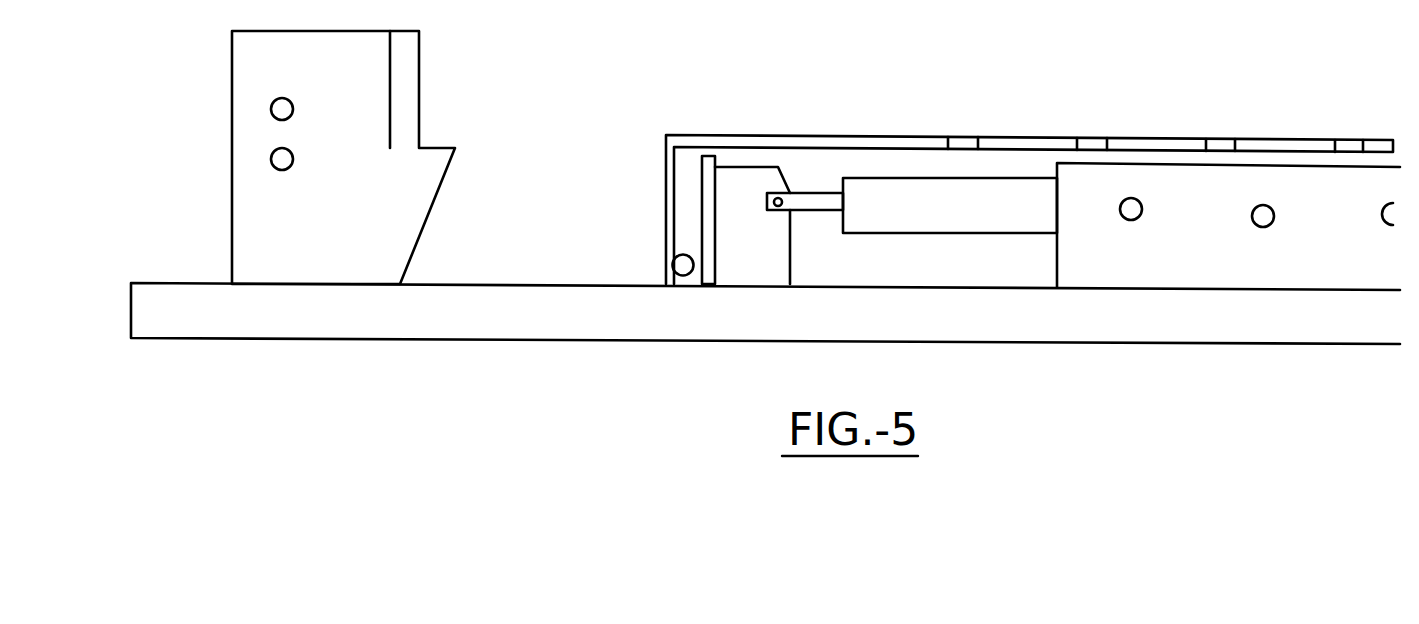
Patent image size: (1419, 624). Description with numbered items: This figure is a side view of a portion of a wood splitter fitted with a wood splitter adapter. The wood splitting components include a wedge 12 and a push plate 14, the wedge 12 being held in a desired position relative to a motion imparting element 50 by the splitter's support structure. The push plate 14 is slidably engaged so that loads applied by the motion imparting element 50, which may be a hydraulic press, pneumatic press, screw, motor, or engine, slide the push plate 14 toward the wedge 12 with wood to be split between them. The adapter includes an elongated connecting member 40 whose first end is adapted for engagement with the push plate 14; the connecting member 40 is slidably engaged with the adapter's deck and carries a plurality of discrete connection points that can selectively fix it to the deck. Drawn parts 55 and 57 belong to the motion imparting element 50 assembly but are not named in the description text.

The wedge 12 is at (396, 231).
The push plate 14 is at (703, 214).
The elongated connecting member 40 is at (815, 134).
The motion imparting element 50 is at (856, 163).
The cylinder 55 is at (947, 202).
The piston rod 57 is at (818, 202).